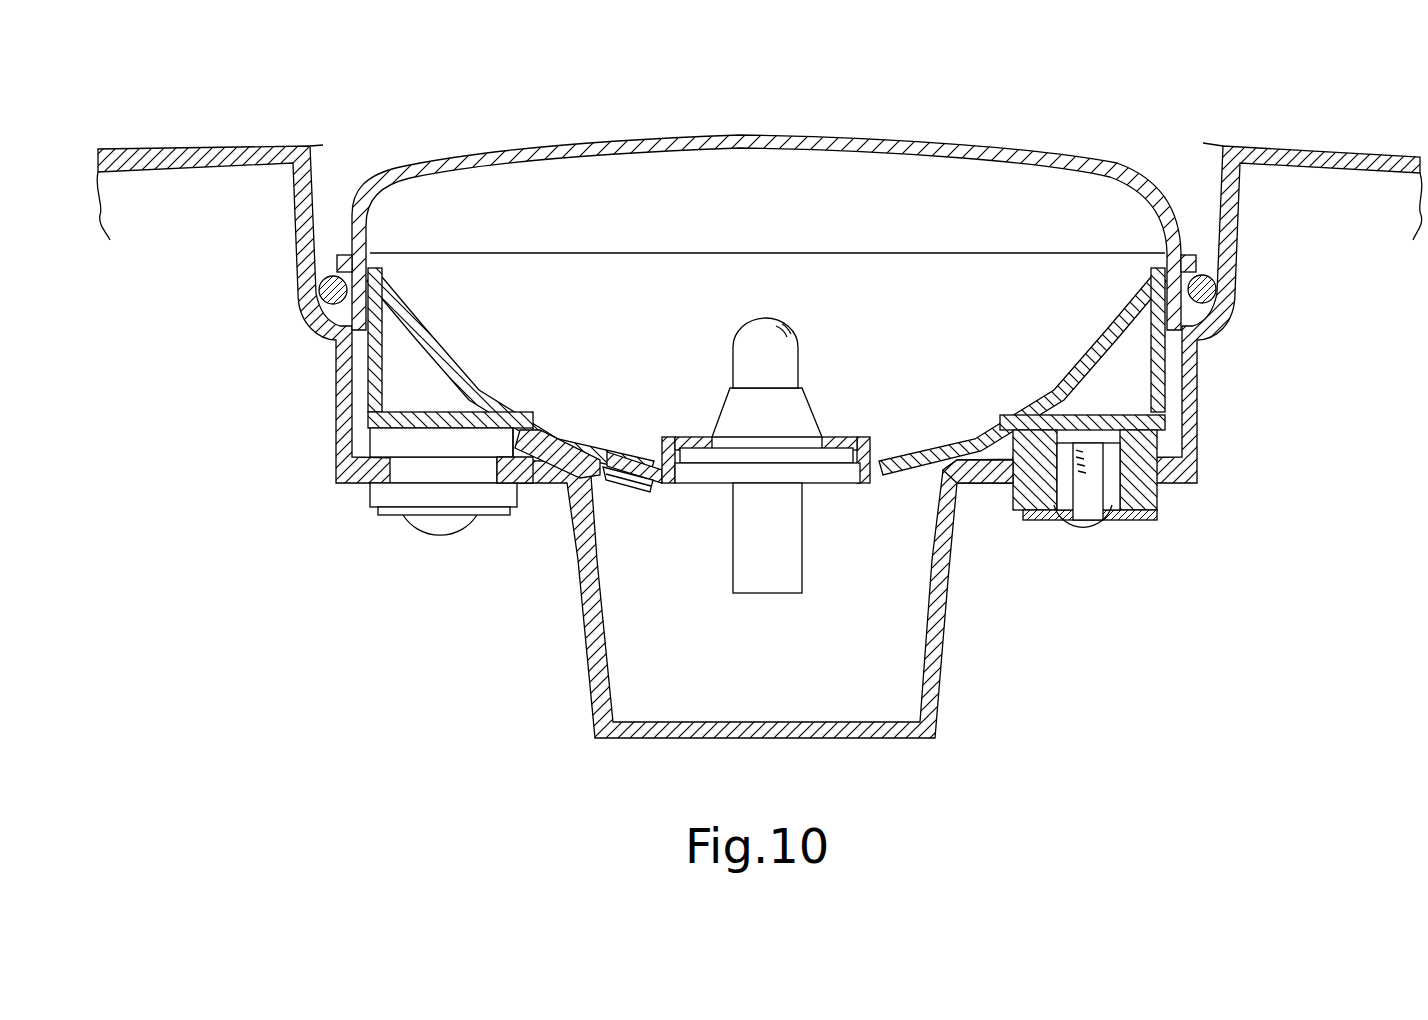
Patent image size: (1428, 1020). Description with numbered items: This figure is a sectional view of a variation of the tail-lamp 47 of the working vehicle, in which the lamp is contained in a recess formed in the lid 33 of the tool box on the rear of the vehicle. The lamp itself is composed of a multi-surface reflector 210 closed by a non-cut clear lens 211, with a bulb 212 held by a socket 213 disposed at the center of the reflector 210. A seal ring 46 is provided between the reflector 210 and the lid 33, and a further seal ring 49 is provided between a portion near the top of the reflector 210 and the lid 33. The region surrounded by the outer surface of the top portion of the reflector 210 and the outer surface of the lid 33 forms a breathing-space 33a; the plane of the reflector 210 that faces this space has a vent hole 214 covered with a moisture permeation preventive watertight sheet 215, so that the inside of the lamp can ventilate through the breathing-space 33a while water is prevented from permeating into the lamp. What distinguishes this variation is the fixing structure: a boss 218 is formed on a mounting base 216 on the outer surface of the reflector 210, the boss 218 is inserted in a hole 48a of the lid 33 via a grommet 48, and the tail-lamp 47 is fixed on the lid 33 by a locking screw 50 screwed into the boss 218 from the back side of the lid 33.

The lid 33 is at (943, 670).
The breathing-space 33a is at (882, 681).
The seal ring 46 is at (1222, 305).
The tail-lamp 47 is at (1022, 133).
The grommet 48 is at (1160, 500).
The hole 48a is at (1078, 495).
The seal ring 49 is at (945, 460).
The locking screw 50 is at (1103, 540).
The reflector 210 is at (767, 364).
The lens 211 is at (708, 137).
The bulb 212 is at (778, 318).
The socket 213 is at (798, 418).
The vent hole 214 is at (632, 462).
The moisture permeation preventive watertight sheet 215 is at (628, 495).
The mounting base 216 is at (1160, 378).
The boss 218 is at (1135, 500).